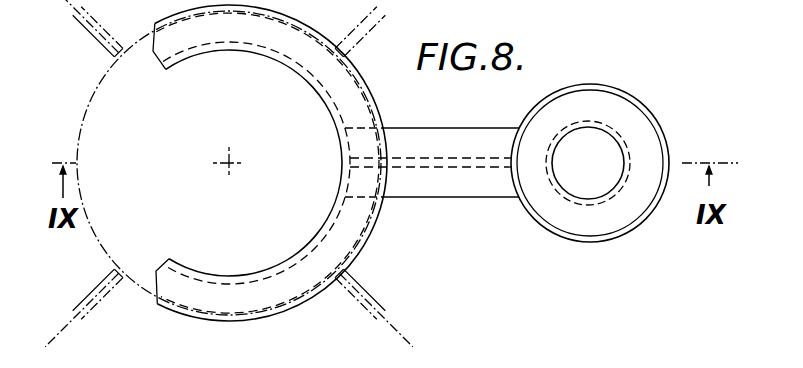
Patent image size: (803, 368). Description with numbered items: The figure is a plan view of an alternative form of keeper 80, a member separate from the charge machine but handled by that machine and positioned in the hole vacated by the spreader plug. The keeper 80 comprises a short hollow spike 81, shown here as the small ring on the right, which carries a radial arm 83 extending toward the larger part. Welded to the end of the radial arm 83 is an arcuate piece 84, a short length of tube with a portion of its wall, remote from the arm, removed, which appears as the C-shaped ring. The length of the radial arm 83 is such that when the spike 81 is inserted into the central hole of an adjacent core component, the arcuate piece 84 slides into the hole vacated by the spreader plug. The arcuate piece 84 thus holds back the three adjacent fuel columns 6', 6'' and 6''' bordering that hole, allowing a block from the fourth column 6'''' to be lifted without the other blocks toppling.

The fuel column 6' is at (348, 29).
The fuel column 6'' is at (386, 29).
The fuel column 6''' is at (141, 318).
The fourth fuel column 6'''' is at (84, 60).
The keeper 80 is at (435, 207).
The hollow spike 81 is at (612, 162).
The radial arm 83 is at (422, 138).
The arcuate piece 84 is at (358, 260).